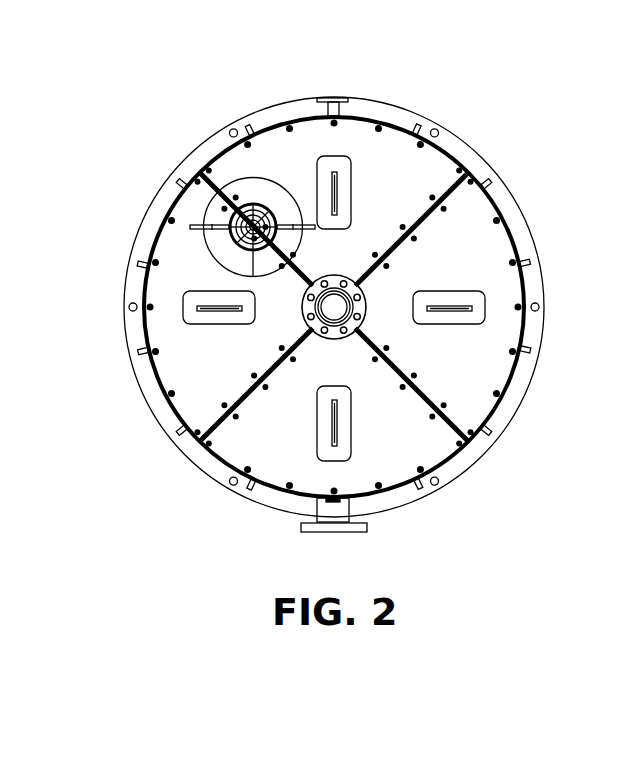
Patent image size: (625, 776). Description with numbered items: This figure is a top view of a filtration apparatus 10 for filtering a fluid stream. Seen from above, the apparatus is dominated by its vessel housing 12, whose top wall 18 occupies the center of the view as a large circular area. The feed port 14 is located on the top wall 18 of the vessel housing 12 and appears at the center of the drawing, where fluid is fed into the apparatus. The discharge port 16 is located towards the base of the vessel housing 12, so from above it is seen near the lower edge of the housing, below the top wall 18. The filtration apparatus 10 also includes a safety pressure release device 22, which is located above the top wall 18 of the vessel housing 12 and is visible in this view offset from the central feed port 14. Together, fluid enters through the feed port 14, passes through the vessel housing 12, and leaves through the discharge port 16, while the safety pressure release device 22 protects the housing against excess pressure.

The filtration apparatus 10 is at (105, 73).
The vessel housing 12 is at (138, 287).
The feed port 14 is at (305, 317).
The discharge port 16 is at (327, 532).
The top wall 18 is at (276, 148).
The safety pressure release device 22 is at (215, 208).